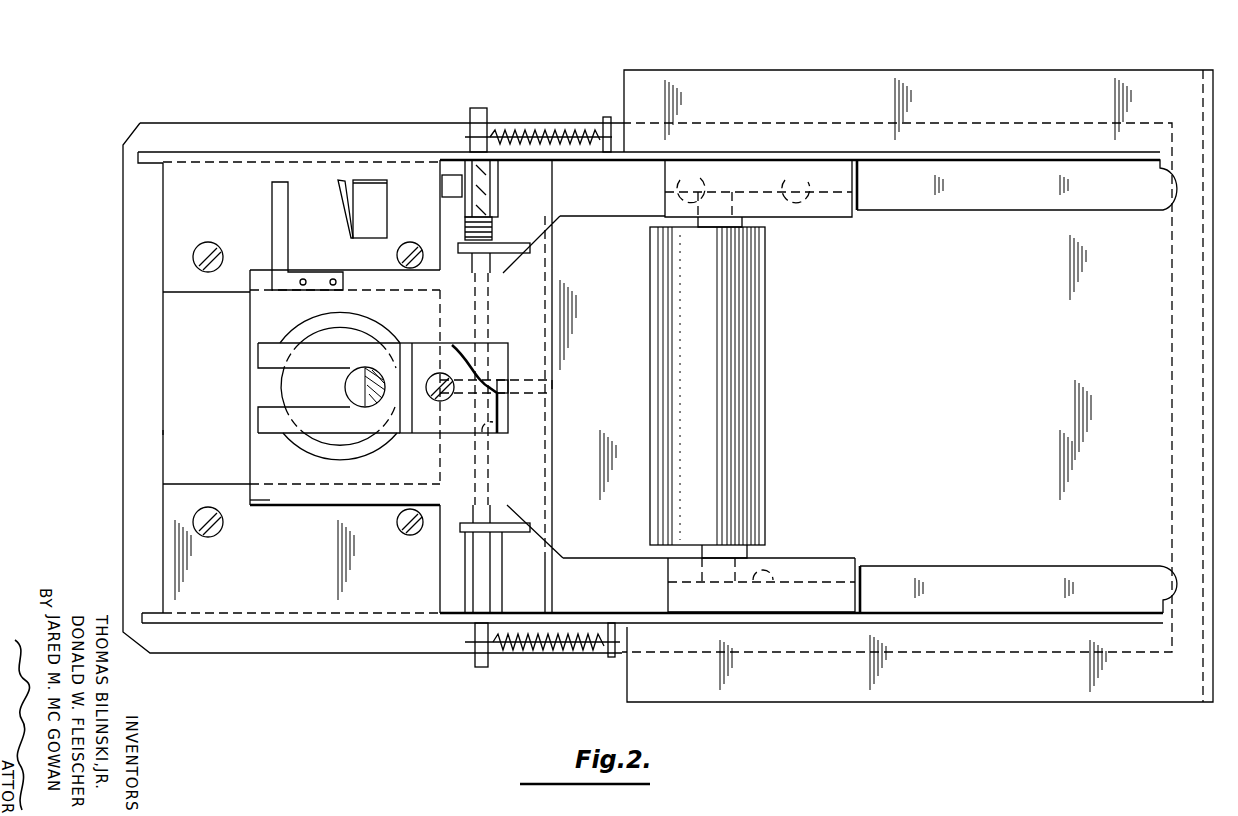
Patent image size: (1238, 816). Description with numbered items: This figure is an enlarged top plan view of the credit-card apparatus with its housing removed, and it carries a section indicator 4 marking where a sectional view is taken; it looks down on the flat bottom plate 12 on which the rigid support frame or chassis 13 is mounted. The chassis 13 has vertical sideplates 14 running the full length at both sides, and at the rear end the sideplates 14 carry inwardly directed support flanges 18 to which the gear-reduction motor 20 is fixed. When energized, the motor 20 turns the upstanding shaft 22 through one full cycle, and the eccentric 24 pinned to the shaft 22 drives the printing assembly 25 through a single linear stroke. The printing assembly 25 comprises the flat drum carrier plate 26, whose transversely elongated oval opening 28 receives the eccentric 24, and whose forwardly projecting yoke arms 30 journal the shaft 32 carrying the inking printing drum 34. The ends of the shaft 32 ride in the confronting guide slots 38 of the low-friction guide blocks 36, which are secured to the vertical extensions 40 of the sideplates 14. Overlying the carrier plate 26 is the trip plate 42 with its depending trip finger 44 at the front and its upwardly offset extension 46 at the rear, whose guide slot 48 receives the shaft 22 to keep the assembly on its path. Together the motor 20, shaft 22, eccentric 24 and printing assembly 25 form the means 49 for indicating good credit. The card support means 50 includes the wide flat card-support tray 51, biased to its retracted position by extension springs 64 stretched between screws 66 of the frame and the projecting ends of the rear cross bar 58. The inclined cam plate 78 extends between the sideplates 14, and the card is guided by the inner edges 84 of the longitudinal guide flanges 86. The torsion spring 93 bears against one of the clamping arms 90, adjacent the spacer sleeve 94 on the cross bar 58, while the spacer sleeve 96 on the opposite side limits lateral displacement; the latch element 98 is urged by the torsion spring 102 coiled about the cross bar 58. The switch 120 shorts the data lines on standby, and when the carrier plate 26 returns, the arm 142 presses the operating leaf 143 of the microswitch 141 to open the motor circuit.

The section line 4 is at (58, 348).
The flat bottom plate 12 is at (437, 197).
The support frame 13 is at (225, 623).
The sideplates 14 is at (512, 150).
The support flanges 18 is at (213, 292).
The gear-reduction motor 20 is at (163, 432).
The shaft 22 is at (362, 380).
The eccentric 24 is at (282, 393).
The printing assembly 25 is at (317, 512).
The drum carrier plate 26 is at (272, 497).
The oval opening 28 is at (352, 316).
The yoke arms 30 is at (720, 228).
The shaft 32 is at (758, 188).
The printing drum 34 is at (766, 306).
The guide blocks 36 is at (857, 190).
The guide slots 38 is at (750, 590).
The vertical extensions 40 is at (790, 160).
The trip plate 42 is at (440, 345).
The trip finger 44 is at (495, 447).
The upwardly offset extension 46 is at (272, 343).
The guide slot 48 is at (258, 378).
The means for indicating a first fact 49 is at (772, 418).
The card support means 50 is at (630, 66).
The card-support tray 51 is at (1016, 332).
The rear cross bar 58 is at (480, 108).
The extension springs 64 is at (560, 130).
The screws 66 is at (607, 117).
The cam plate 78 is at (548, 585).
The inner edges 84 is at (1022, 212).
The guide flanges 86 is at (970, 162).
The arms 90 is at (505, 255).
The torsion spring 93 is at (465, 226).
The spacer sleeve 94 is at (465, 175).
The spacer sleeve 96 is at (462, 568).
The latch element 98 is at (523, 397).
The torsion spring 102 is at (510, 378).
The single-pole double-throw switch 120 is at (443, 178).
The microswitch 141 is at (360, 182).
The arm 142 is at (272, 195).
The operating leaf 143 is at (341, 207).